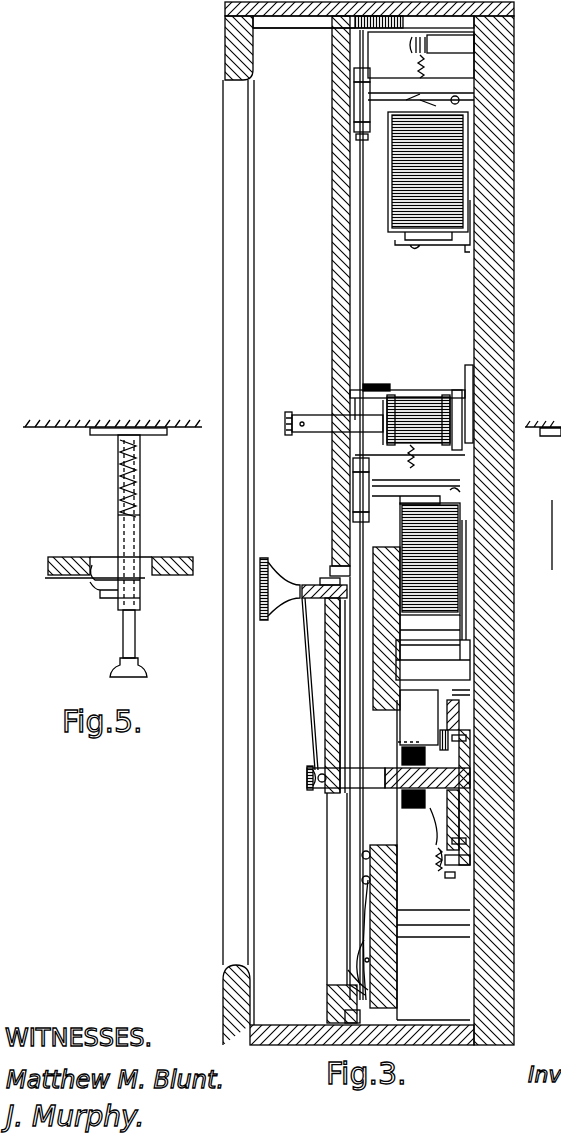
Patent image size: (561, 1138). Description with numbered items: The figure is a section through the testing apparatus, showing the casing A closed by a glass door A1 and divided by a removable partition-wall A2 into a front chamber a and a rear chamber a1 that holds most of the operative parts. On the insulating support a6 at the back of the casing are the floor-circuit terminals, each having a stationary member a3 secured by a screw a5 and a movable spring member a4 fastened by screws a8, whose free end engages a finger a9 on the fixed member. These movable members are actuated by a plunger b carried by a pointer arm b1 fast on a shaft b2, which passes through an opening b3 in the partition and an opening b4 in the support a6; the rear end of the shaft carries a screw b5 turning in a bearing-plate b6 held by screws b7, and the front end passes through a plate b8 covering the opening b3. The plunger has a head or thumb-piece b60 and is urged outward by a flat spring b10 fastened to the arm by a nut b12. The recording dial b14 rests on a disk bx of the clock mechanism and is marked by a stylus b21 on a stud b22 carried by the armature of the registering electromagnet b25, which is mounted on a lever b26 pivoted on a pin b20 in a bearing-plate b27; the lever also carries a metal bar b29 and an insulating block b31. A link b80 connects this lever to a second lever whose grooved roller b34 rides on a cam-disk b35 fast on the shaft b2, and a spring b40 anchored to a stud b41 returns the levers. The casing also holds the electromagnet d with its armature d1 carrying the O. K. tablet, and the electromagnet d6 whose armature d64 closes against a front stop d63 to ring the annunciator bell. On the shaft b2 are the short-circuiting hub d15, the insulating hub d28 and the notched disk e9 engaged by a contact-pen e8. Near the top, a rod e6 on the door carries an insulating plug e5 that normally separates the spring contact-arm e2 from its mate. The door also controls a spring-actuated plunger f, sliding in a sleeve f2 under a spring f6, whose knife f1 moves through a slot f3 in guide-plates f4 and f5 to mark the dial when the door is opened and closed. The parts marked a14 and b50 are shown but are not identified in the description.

In FIG. 3, the casing A is at (514, 598).
In FIG. 3, the door A1 is at (246, 758).
In FIG. 3, the partition-wall A2 is at (332, 318).
In FIG. 3, the chamber a is at (287, 475).
In FIG. 3, the chamber a1 is at (415, 323).
In FIG. 3, the stationary member a3 is at (350, 1006).
In FIG. 3, the movable member a4 is at (360, 945).
In FIG. 3, the screw a5 is at (350, 992).
In FIG. 3, the insulating-support a6 is at (397, 985).
In FIG. 3, the screws a8 is at (362, 882).
In FIG. 3, the finger a9 is at (350, 975).
In FIG. 3, the pin a14 is at (370, 960).
In FIG. 3, the plunger b is at (302, 620).
In FIG. 3, the arm or pointer b1 is at (325, 655).
In FIG. 3, the shaft b2 is at (357, 787).
In FIG. 3, the opening b3 is at (330, 868).
In FIG. 3, the opening b4 is at (312, 584).
In FIG. 3, the screw b5 is at (470, 770).
In FIG. 3, the bearing-plate b6 is at (470, 745).
In FIG. 3, the screws b7 is at (525, 832).
In FIG. 3, the disk or plate b8 is at (345, 838).
In FIG. 3, the flat spring b10 is at (318, 686).
In FIG. 3, the nut or screw b12 is at (306, 778).
In FIG. 5, the recording dial b14 is at (70, 580).
In FIG. 3, the pivot-pin or shaft b20 is at (560, 465).
In FIG. 3, the stylus b21 is at (302, 430).
In FIG. 3, the stud or arm b22 is at (302, 414).
In FIG. 3, the electromagnet b25 is at (418, 410).
In FIG. 3, the lever b26 is at (456, 392).
In FIG. 3, the bearing-plate b27 is at (534, 443).
In FIG. 3, the metal plate or bar b29 is at (355, 390).
In FIG. 3, the insulating-block b31 is at (560, 530).
In FIG. 3, the grooved roller b34 is at (458, 740).
In FIG. 3, the cam-disk b35 is at (445, 700).
In FIG. 3, the spring b40 is at (470, 858).
In FIG. 3, the stud or screw b41 is at (450, 880).
In FIG. 3, the cap b50 is at (326, 578).
In FIG. 3, the head or thumb-piece b60 is at (266, 560).
In FIG. 3, the link or rod b80 is at (470, 500).
In FIG. 5, the disk bx is at (175, 556).
In FIG. 3, the electromagnet d is at (458, 574).
In FIG. 3, the armature d1 is at (400, 498).
In FIG. 3, the electromagnet d6 is at (462, 190).
In FIG. 3, the hub or sleeve d15 is at (402, 750).
In FIG. 3, the insulating hub d28 is at (410, 808).
In FIG. 3, the front stop d63 is at (356, 138).
In FIG. 3, the armature d64 is at (420, 100).
In FIG. 3, the spring contact-arm e2 is at (440, 30).
In FIG. 3, the insulating plug e5 is at (380, 28).
In FIG. 3, the rod or bar e6 is at (290, 28).
In FIG. 3, the contact-pen e8 is at (442, 745).
In FIG. 3, the circuit-controlling disk e9 is at (430, 839).
In FIG. 5, the plunger f is at (136, 630).
In FIG. 5, the knife f1 is at (116, 600).
In FIG. 5, the sleeve or tube f2 is at (140, 530).
In FIG. 5, the slot f3 is at (140, 512).
In FIG. 5, the guide-plate f4 is at (95, 592).
In FIG. 5, the guide-plate f5 is at (92, 565).
In FIG. 5, the spring f6 is at (120, 476).